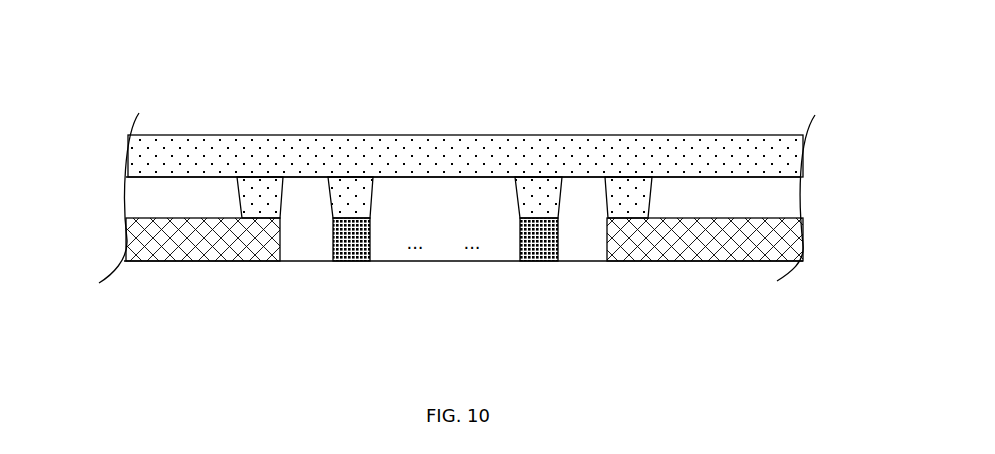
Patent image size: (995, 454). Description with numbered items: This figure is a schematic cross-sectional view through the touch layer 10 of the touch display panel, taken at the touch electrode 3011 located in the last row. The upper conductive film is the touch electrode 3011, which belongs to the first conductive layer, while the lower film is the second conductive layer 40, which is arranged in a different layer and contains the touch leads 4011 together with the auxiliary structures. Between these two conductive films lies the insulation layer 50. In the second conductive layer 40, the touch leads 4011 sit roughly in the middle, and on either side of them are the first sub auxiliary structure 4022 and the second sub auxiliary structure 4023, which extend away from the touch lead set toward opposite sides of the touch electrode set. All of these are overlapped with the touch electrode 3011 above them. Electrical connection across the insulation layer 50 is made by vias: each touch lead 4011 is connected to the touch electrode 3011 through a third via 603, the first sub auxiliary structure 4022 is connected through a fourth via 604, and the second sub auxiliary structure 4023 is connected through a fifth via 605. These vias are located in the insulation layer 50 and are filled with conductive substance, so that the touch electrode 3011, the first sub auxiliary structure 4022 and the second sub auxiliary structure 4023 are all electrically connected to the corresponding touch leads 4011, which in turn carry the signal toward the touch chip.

The touch layer 10 is at (108, 85).
The touch electrode 3011 is at (450, 157).
The fourth via 604 is at (237, 194).
The third via 603 is at (329, 194).
The fifth via 605 is at (653, 194).
The insulation layer 50 is at (787, 207).
The first sub auxiliary structure 4022 is at (266, 262).
The touch lead 4011 is at (354, 262).
The second sub auxiliary structure 4023 is at (634, 262).
The second conductive layer 40 is at (252, 325).